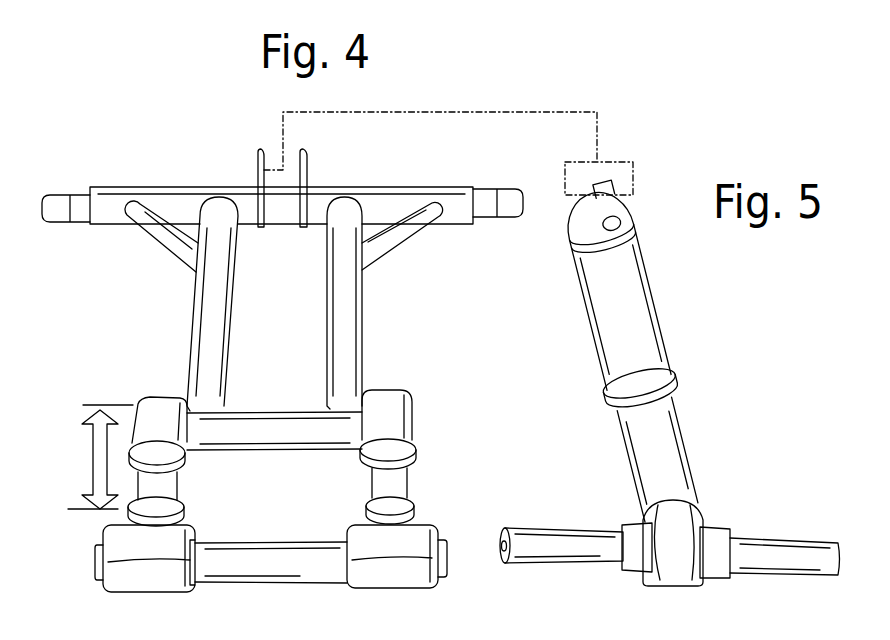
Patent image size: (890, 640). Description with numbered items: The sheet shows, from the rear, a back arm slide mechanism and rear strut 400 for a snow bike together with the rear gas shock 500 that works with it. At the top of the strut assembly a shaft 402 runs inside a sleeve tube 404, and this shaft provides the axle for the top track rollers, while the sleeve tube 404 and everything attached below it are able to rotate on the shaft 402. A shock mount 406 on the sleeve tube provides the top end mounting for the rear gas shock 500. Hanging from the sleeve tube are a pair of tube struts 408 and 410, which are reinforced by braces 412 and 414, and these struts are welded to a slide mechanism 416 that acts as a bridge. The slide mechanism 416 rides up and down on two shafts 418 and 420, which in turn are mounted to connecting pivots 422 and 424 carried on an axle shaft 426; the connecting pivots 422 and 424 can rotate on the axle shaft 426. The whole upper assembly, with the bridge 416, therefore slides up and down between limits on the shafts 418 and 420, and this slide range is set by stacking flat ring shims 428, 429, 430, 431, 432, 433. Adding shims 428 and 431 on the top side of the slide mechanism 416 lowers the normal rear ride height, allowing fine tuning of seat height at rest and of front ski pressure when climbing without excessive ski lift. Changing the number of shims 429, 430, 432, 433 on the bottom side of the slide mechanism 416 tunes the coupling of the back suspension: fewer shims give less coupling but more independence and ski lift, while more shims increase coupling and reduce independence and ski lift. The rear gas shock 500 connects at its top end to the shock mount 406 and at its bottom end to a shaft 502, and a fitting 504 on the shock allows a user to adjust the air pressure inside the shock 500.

In FIG. 4, the back arm slide mechanism and rear strut 400 is at (168, 131).
In FIG. 4, the shaft 402 is at (63, 192).
In FIG. 4, the sleeve tube 404 is at (172, 191).
In FIG. 4, the shock mount 406 is at (262, 147).
In FIG. 4, the tube strut 408 is at (230, 307).
In FIG. 4, the tube strut 410 is at (356, 302).
In FIG. 4, the brace 412 is at (176, 254).
In FIG. 4, the brace 414 is at (387, 246).
In FIG. 4, the slide mechanism 416 is at (274, 431).
In FIG. 4, the shaft 418 is at (176, 483).
In FIG. 4, the shaft 420 is at (412, 479).
In FIG. 4, the connecting pivot 422 is at (129, 588).
In FIG. 4, the connecting pivot 424 is at (388, 590).
In FIG. 4, the axle shaft 426 is at (268, 562).
In FIG. 4, the shim 428 is at (172, 396).
In FIG. 4, the shim 429 is at (188, 459).
In FIG. 4, the shim 430 is at (181, 509).
In FIG. 4, the shim 431 is at (408, 403).
In FIG. 4, the shim 432 is at (418, 447).
In FIG. 4, the shim 433 is at (414, 507).
In FIG. 5, the rear gas shock 500 is at (703, 327).
In FIG. 5, the shaft 502 is at (545, 563).
In FIG. 5, the fitting 504 is at (612, 225).